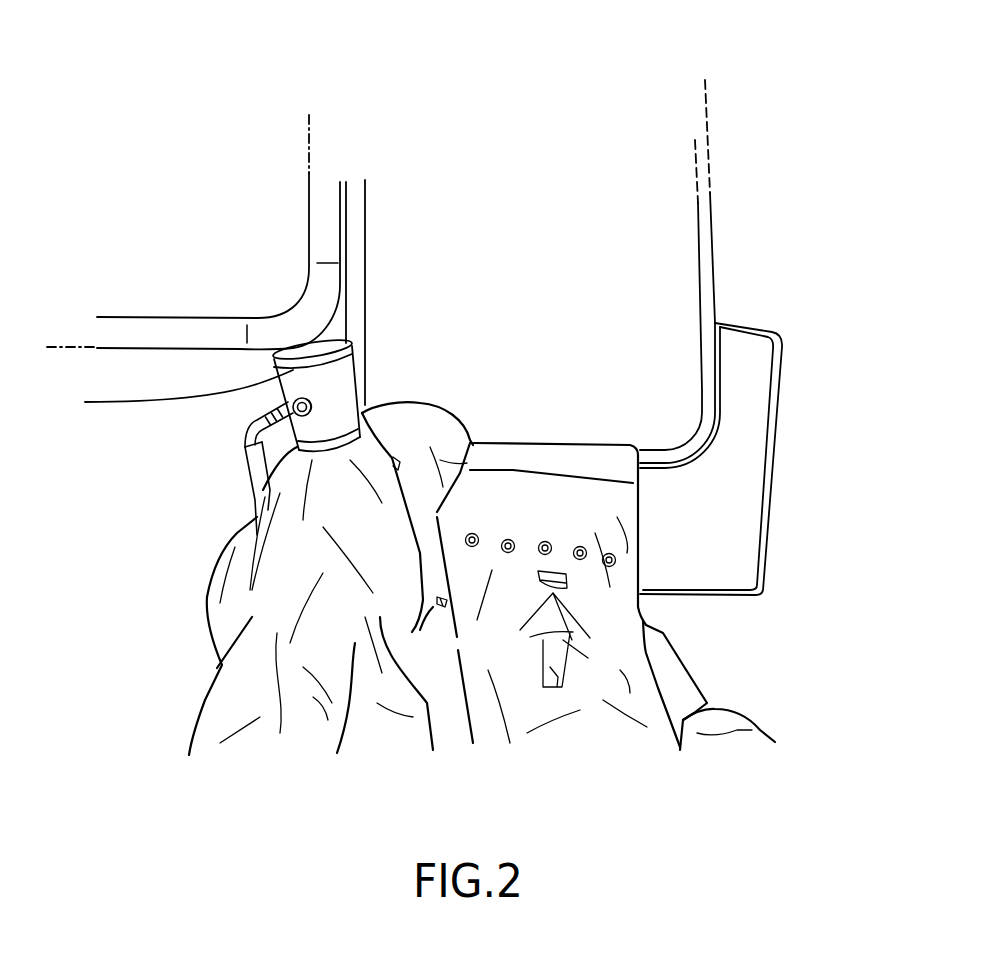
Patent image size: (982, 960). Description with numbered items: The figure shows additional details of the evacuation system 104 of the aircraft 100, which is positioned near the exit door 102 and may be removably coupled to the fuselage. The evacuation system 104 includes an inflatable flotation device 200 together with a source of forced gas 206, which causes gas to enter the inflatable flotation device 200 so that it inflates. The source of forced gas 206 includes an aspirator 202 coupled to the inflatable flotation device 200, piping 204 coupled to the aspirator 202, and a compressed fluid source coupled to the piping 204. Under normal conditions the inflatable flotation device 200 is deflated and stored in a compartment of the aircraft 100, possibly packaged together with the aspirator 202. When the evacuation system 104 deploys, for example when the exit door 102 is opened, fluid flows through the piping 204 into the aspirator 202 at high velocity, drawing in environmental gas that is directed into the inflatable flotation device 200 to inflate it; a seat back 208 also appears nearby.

The aircraft 100 is at (417, 84).
The exit door 102 is at (690, 208).
The evacuation system 104 is at (146, 572).
The inflatable flotation device 200 is at (335, 733).
The aspirator 202 is at (343, 388).
The piping 204 is at (252, 477).
The source of forced gas 206 is at (294, 322).
The seat back 208 is at (690, 448).